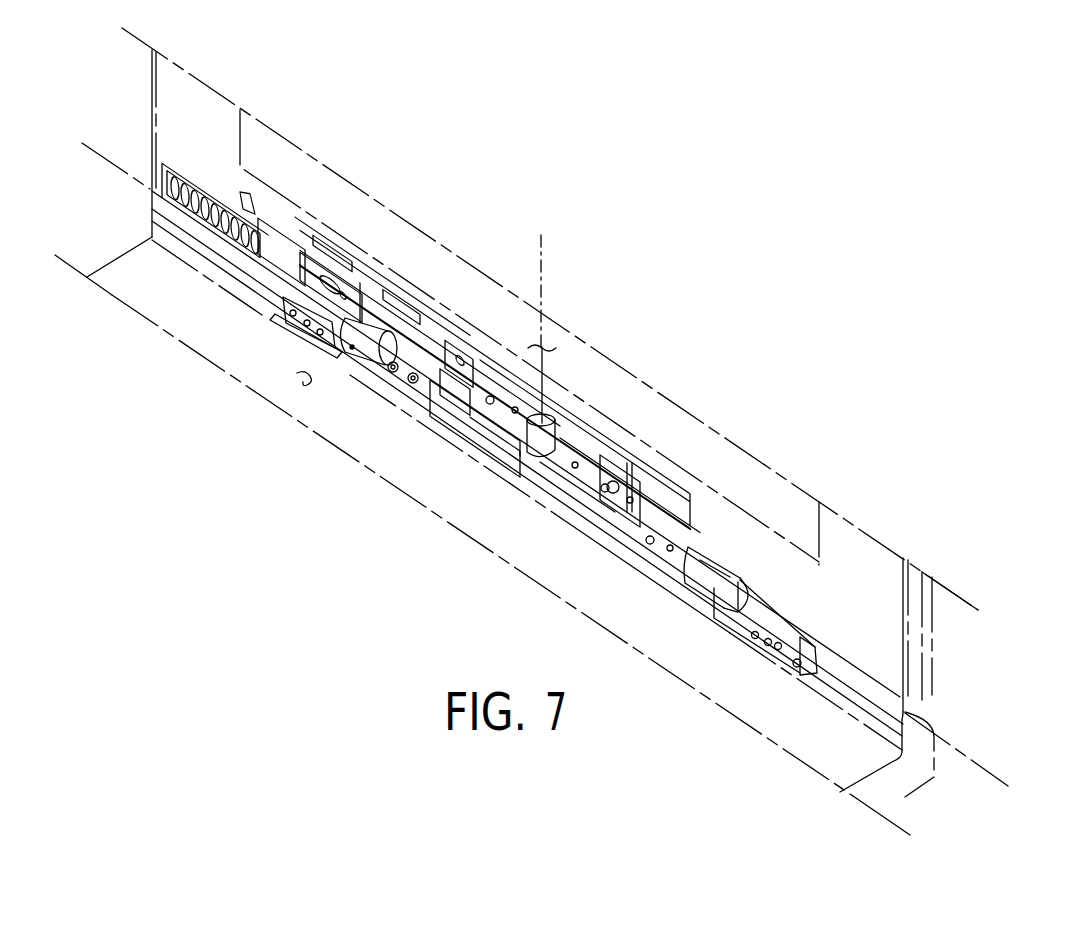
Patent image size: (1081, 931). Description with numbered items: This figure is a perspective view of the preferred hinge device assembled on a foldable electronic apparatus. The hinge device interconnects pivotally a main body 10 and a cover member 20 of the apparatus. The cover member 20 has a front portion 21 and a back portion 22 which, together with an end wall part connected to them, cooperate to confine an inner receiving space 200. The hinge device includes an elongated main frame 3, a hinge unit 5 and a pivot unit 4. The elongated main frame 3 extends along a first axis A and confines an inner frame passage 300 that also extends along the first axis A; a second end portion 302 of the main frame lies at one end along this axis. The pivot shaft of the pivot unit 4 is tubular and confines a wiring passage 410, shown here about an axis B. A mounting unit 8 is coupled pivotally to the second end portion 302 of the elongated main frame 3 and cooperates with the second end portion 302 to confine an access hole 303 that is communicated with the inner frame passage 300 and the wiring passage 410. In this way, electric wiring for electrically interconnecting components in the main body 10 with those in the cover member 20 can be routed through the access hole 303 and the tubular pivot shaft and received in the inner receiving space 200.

The elongated main frame 3 is at (655, 590).
The pivot unit 4 is at (563, 401).
The hinge unit 5 is at (741, 645).
The mounting unit 8 is at (268, 325).
The main body 10 is at (870, 810).
The cover member 20 is at (925, 567).
The front portion 21 is at (910, 695).
The back portion 22 is at (925, 637).
The inner receiving space 200 is at (883, 662).
The inner frame passage 300 is at (420, 410).
The second end portion 302 is at (354, 350).
The access hole 303 is at (455, 375).
The wiring passage 410 is at (542, 413).
The first axis A is at (1017, 787).
The axis B is at (541, 262).